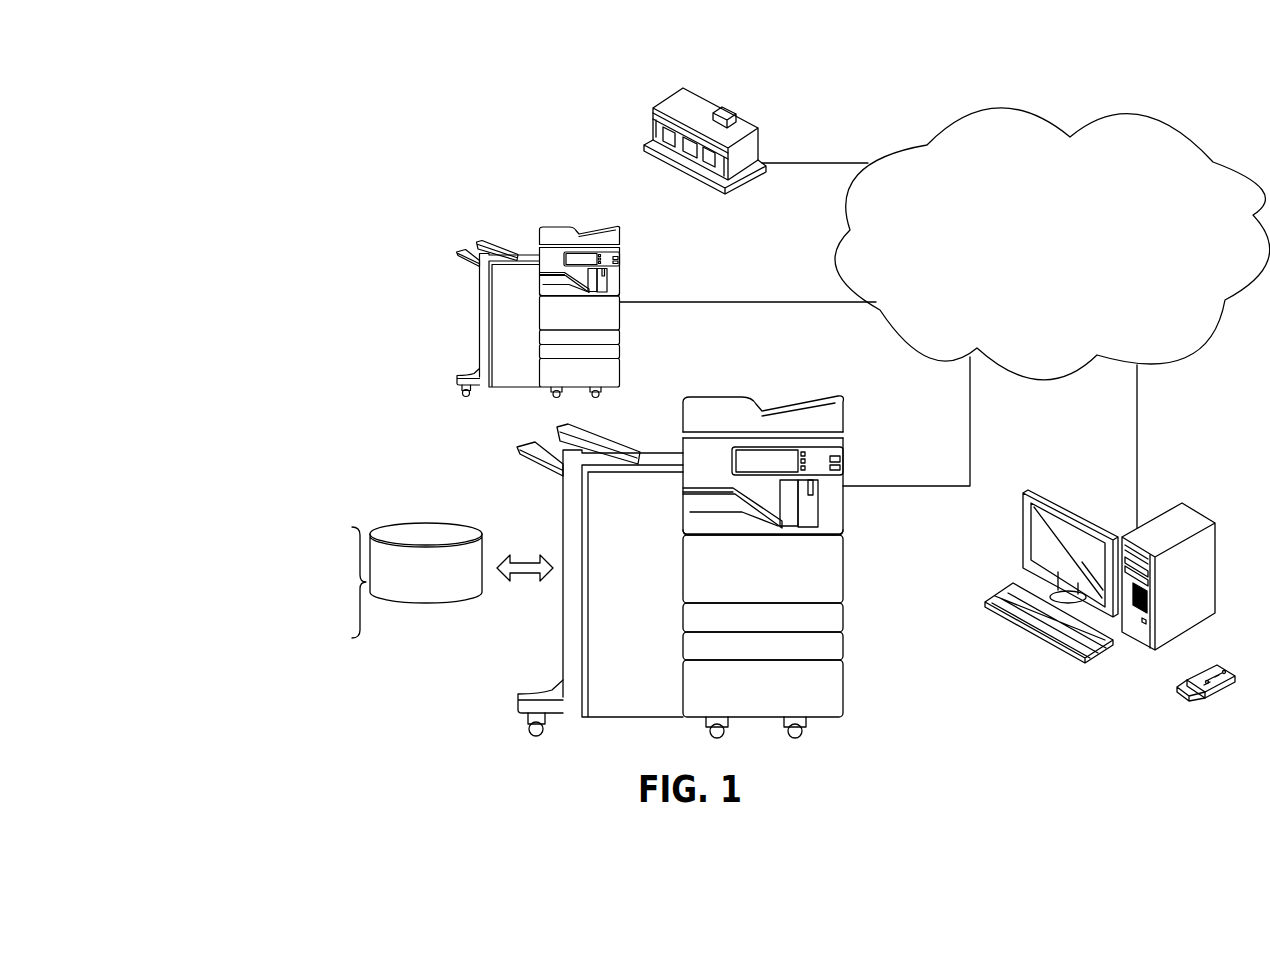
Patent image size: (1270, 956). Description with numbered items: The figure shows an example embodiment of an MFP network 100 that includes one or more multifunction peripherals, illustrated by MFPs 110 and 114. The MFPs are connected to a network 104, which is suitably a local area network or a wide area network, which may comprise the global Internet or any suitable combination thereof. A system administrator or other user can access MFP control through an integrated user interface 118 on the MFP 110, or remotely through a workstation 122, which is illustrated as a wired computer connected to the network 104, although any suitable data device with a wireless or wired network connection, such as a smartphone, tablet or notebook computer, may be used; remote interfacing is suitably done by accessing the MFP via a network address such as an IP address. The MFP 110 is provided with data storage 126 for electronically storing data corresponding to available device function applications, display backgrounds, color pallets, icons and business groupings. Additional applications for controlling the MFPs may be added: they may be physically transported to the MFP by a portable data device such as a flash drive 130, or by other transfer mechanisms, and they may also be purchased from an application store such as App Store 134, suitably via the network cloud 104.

The MFP network 100 is at (1208, 122).
The network 104 is at (1192, 352).
The MFP 110 is at (713, 567).
The MFP 114 is at (478, 302).
The integrated user interface 118 is at (783, 462).
The workstation 122 is at (1198, 514).
The data storage 126 is at (423, 606).
The flash drive 130 is at (1222, 697).
The App Store 134 is at (757, 137).